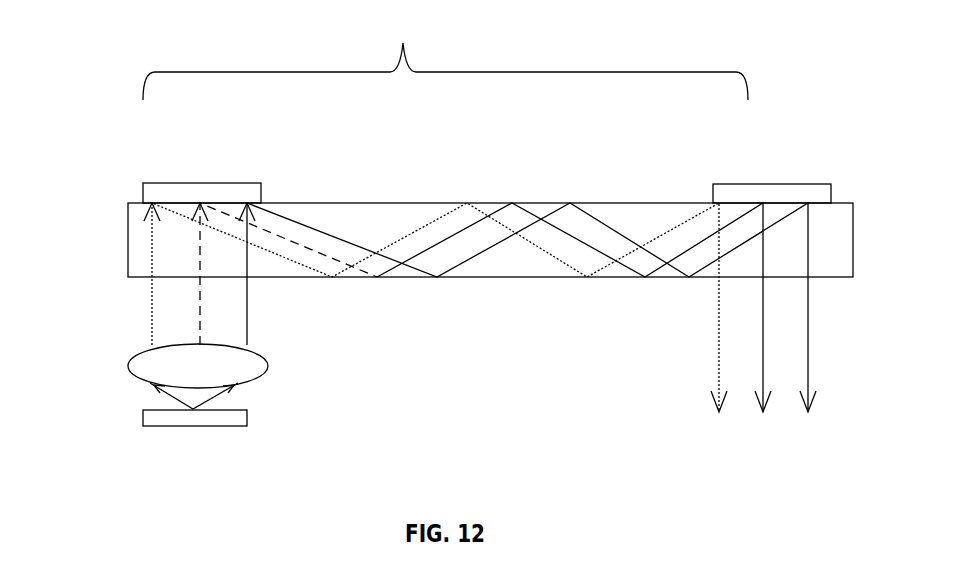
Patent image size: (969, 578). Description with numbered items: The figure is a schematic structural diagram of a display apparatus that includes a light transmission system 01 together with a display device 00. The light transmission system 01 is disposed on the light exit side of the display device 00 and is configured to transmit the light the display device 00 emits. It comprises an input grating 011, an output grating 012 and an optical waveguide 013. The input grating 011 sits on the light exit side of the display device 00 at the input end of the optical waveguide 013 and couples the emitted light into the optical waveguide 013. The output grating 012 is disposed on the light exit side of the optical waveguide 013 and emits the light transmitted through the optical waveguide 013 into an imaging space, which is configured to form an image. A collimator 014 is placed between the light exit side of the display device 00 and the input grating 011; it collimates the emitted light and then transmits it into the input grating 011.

The light transmission system 01 is at (445, 58).
The input grating 011 is at (203, 183).
The output grating 012 is at (738, 184).
The optical waveguide 013 is at (429, 203).
The collimator 014 is at (140, 353).
The display device 00 is at (232, 426).